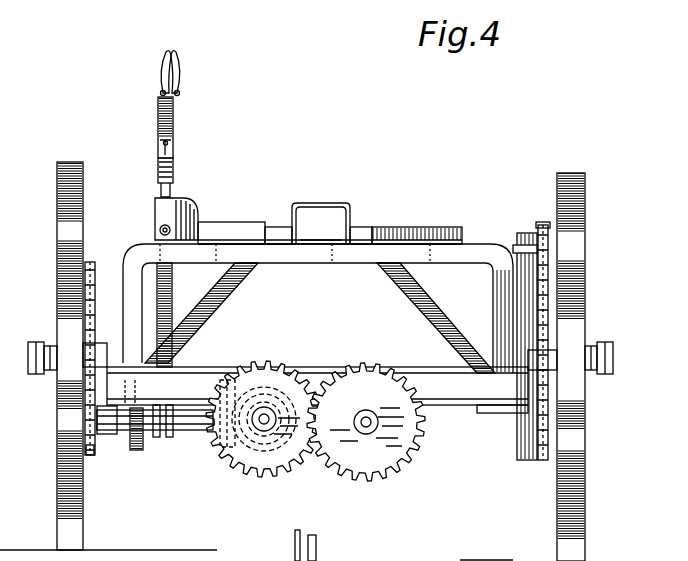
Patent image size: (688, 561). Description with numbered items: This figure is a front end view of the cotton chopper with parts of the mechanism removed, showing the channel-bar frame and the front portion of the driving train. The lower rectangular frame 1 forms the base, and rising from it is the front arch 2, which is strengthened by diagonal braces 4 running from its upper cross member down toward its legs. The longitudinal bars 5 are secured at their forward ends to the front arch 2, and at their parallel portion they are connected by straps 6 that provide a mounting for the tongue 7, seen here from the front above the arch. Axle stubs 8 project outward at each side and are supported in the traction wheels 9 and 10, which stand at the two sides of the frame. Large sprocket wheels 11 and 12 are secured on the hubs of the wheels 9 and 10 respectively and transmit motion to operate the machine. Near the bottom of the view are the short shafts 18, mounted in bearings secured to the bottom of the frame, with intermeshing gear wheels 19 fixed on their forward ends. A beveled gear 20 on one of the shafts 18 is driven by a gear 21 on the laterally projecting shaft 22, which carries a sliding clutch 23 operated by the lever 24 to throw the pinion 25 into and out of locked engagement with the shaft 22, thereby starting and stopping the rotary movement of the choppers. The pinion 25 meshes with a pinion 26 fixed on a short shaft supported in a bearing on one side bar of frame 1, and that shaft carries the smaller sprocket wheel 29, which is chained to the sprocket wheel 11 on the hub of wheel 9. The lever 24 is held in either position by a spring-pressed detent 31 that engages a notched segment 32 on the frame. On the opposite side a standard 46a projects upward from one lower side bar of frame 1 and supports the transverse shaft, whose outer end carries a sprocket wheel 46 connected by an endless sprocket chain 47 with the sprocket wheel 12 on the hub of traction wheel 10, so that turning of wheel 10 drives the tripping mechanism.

The lower rectangular frame 1 is at (463, 413).
The front arch 2 is at (358, 262).
The diagonal braces 4 is at (240, 287).
The longitudinal bars 5 is at (250, 224).
The straps 6 is at (308, 207).
The tongue 7 is at (322, 213).
The axle stubs 8 is at (40, 347).
The traction wheel 9 is at (57, 257).
The traction wheel 10 is at (587, 277).
The large sprocket wheel 11 is at (88, 289).
The large sprocket wheel 12 is at (543, 462).
The short shafts 18 is at (367, 416).
The intermeshing gear wheels 19 is at (258, 471).
The beveled gear 20 is at (282, 453).
The gear 21 is at (238, 380).
The laterally projecting shaft 22 is at (222, 430).
The sliding clutch 23 is at (168, 410).
The lever 24 is at (175, 145).
The pinion 25 is at (162, 437).
The pinion 26 is at (140, 450).
The smaller sprocket wheel 29 is at (92, 455).
The spring-pressed detent 31 is at (173, 191).
The notched segment 32 is at (196, 214).
The sprocket wheel 46 is at (552, 222).
The standard 46a is at (525, 253).
The endless sprocket chain 47 is at (550, 313).